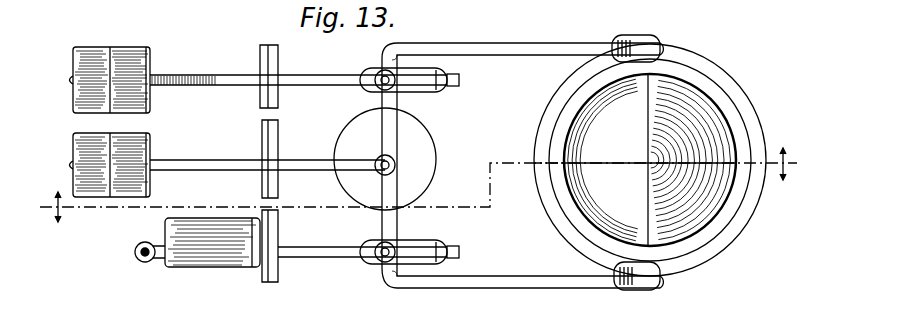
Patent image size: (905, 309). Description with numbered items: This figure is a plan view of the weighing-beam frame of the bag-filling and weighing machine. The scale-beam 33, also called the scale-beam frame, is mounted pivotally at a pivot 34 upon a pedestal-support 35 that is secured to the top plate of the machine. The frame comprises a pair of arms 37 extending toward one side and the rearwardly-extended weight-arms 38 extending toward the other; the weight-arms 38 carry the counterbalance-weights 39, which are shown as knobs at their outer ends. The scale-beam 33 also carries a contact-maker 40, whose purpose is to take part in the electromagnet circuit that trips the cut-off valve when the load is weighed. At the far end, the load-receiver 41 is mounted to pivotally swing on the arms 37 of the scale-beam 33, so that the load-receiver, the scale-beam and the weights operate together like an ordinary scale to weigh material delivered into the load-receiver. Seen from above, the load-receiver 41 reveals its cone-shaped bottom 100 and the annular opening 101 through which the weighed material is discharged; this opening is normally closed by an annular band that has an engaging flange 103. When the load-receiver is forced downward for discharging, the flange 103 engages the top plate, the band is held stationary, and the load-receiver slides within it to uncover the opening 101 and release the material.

The scale-beam 33 is at (467, 166).
The pivot 34 is at (378, 89).
The pedestal-support 35 is at (428, 152).
The arms 37 is at (493, 45).
The weight-arms 38 is at (238, 76).
The counterbalance-weights 39 is at (102, 50).
The contact-maker 40 is at (145, 263).
The load-receiver 41 is at (580, 108).
The cone-shaped bottom 100 is at (690, 127).
The annular opening 101 is at (646, 136).
The engaging flange 103 is at (538, 151).